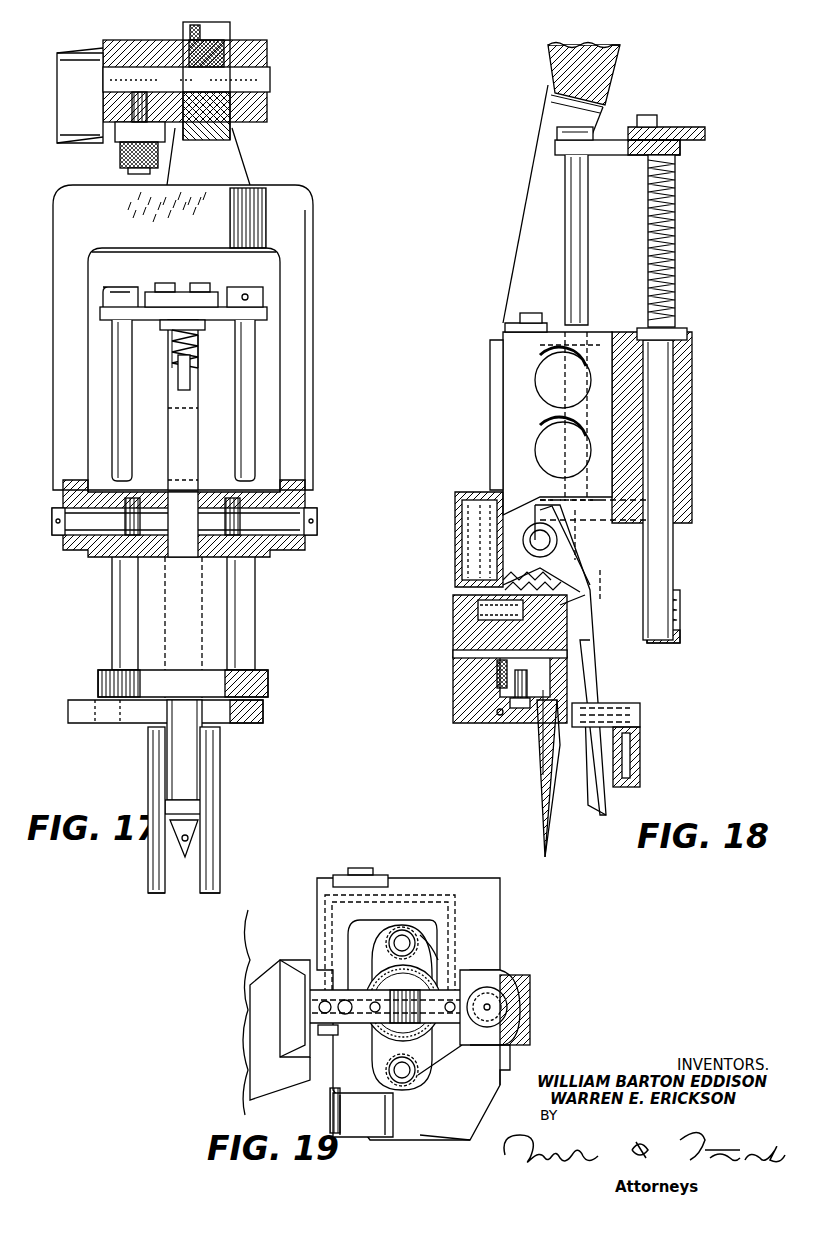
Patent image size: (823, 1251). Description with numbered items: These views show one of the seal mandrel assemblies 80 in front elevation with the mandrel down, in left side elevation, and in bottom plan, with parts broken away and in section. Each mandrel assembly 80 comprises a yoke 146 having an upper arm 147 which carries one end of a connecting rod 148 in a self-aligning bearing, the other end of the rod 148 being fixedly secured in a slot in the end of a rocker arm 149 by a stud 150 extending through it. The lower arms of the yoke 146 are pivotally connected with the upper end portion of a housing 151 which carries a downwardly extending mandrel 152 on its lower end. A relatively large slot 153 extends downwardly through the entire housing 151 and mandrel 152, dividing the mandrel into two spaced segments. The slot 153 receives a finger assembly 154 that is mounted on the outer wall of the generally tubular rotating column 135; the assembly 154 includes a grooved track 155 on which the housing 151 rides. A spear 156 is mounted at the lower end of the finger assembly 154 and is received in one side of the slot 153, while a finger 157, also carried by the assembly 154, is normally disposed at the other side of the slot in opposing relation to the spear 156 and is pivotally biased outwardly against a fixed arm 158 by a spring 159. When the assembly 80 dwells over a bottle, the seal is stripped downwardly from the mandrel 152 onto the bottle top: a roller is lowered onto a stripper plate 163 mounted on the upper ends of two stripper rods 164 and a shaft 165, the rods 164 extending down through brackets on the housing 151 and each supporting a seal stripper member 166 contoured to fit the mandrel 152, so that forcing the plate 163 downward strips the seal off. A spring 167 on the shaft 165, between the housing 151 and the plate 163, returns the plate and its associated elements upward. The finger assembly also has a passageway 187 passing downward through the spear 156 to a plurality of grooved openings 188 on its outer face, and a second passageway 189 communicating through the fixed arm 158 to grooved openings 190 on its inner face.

In FIG. 17, the mandrel assembly 80 is at (311, 290).
In FIG. 18, the mandrel assembly 80 is at (685, 110).
In FIG. 19, the mandrel assembly 80 is at (517, 957).
In FIG. 19, the column 135 is at (250, 1058).
In FIG. 17, the yoke 146 is at (300, 375).
In FIG. 18, the yoke 146 is at (530, 230).
In FIG. 19, the yoke 146 is at (502, 910).
In FIG. 17, the upper arm 147 is at (230, 160).
In FIG. 17, the connecting rod 148 is at (262, 84).
In FIG. 17, the rocker arm 149 is at (123, 42).
In FIG. 17, the stud 150 is at (120, 156).
In FIG. 17, the housing 151 is at (265, 560).
In FIG. 18, the housing 151 is at (692, 446).
In FIG. 19, the housing 151 is at (500, 1068).
In FIG. 17, the mandrel 152 is at (156, 895).
In FIG. 18, the mandrel 152 is at (607, 585).
In FIG. 19, the mandrel 152 is at (415, 988).
In FIG. 17, the slot 153 is at (182, 888).
In FIG. 18, the slot 153 is at (605, 620).
In FIG. 19, the slot 153 is at (380, 1025).
In FIG. 17, the finger assembly 154 is at (190, 402).
In FIG. 18, the finger assembly 154 is at (530, 425).
In FIG. 19, the finger assembly 154 is at (295, 975).
In FIG. 18, the grooved track 155 is at (503, 430).
In FIG. 17, the spear 156 is at (192, 841).
In FIG. 18, the spear 156 is at (540, 823).
In FIG. 18, the finger 157 is at (606, 812).
In FIG. 17, the fixed arm 158 is at (195, 826).
In FIG. 18, the fixed arm 158 is at (640, 775).
In FIG. 19, the fixed arm 158 is at (440, 1000).
In FIG. 18, the spring 159 is at (600, 596).
In FIG. 17, the stripper plate 163 is at (103, 314).
In FIG. 18, the stripper plate 163 is at (560, 148).
In FIG. 17, the stripper rods 164 is at (125, 455).
In FIG. 18, the stripper rods 164 is at (572, 281).
In FIG. 19, the stripper rods 164 is at (402, 940).
In FIG. 17, the shaft 165 is at (180, 376).
In FIG. 18, the shaft 165 is at (665, 205).
In FIG. 17, the seal stripper member 166 is at (260, 723).
In FIG. 19, the seal stripper member 166 is at (385, 962).
In FIG. 17, the spring 167 is at (175, 346).
In FIG. 18, the spring 167 is at (672, 229).
In FIG. 18, the passageway 187 is at (540, 740).
In FIG. 18, the grooved openings 188 is at (542, 778).
In FIG. 18, the second passageway 189 is at (497, 735).
In FIG. 19, the second passageway 189 is at (450, 917).
In FIG. 18, the grooved openings 190 is at (635, 733).